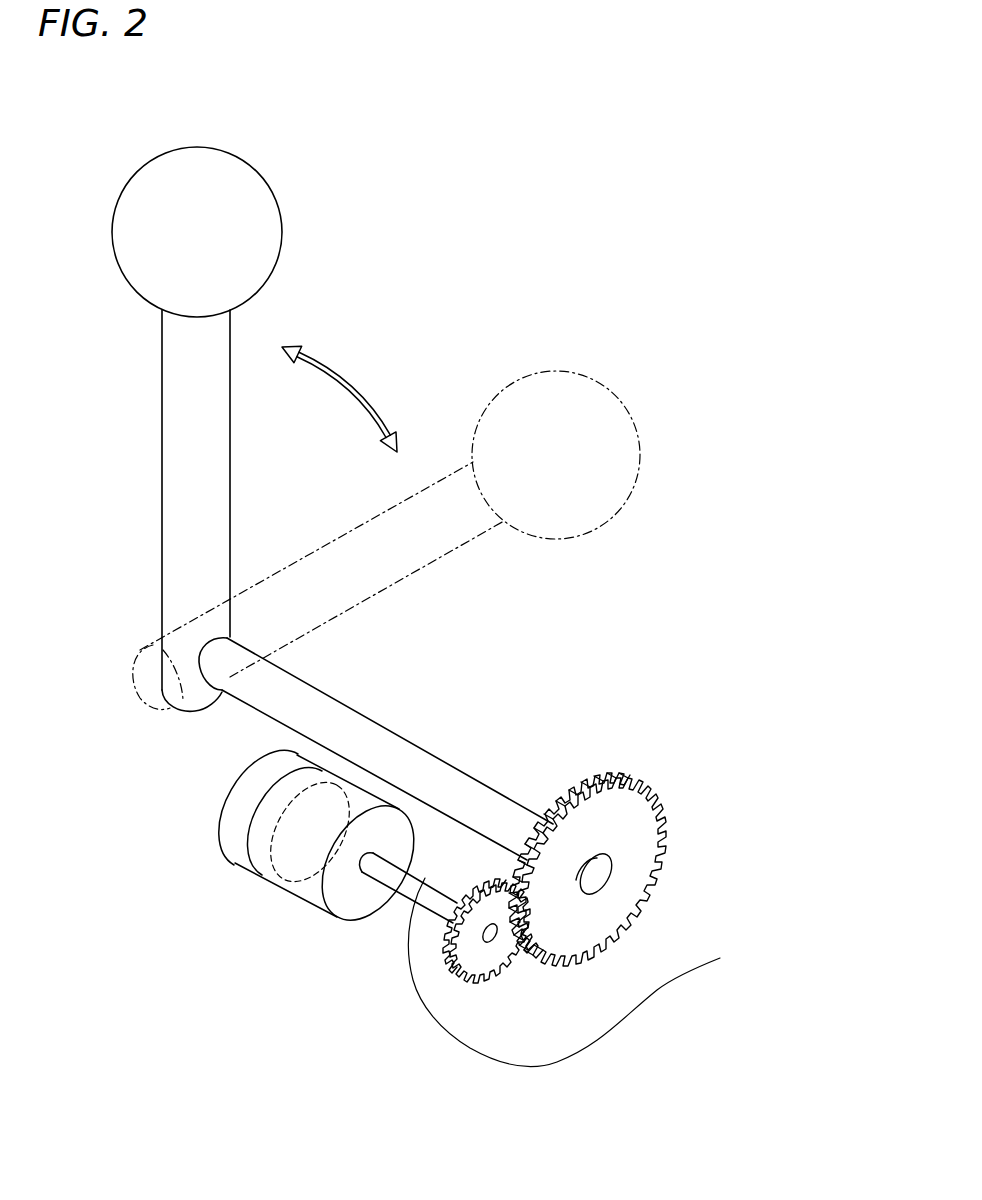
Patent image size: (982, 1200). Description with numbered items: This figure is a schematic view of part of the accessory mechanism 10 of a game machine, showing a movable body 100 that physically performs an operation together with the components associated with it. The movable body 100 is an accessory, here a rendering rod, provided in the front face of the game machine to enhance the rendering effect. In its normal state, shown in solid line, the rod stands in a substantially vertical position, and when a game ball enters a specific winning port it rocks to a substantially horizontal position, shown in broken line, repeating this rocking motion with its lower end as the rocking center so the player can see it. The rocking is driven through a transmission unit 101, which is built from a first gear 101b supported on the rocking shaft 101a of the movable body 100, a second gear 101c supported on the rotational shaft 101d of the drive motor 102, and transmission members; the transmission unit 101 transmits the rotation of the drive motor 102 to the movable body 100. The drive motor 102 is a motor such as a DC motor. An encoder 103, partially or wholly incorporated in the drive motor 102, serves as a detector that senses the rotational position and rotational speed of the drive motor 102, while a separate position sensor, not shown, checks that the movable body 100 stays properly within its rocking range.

The accessory mechanism 10 is at (557, 136).
The movable body 100 is at (180, 437).
The transmission unit 101 is at (789, 724).
The rocking shaft 101a is at (452, 778).
The first gear 101b is at (640, 828).
The second gear 101c is at (500, 957).
The rotational shaft 101d is at (599, 972).
The drive motor 102 is at (309, 889).
The encoder 103 is at (234, 804).